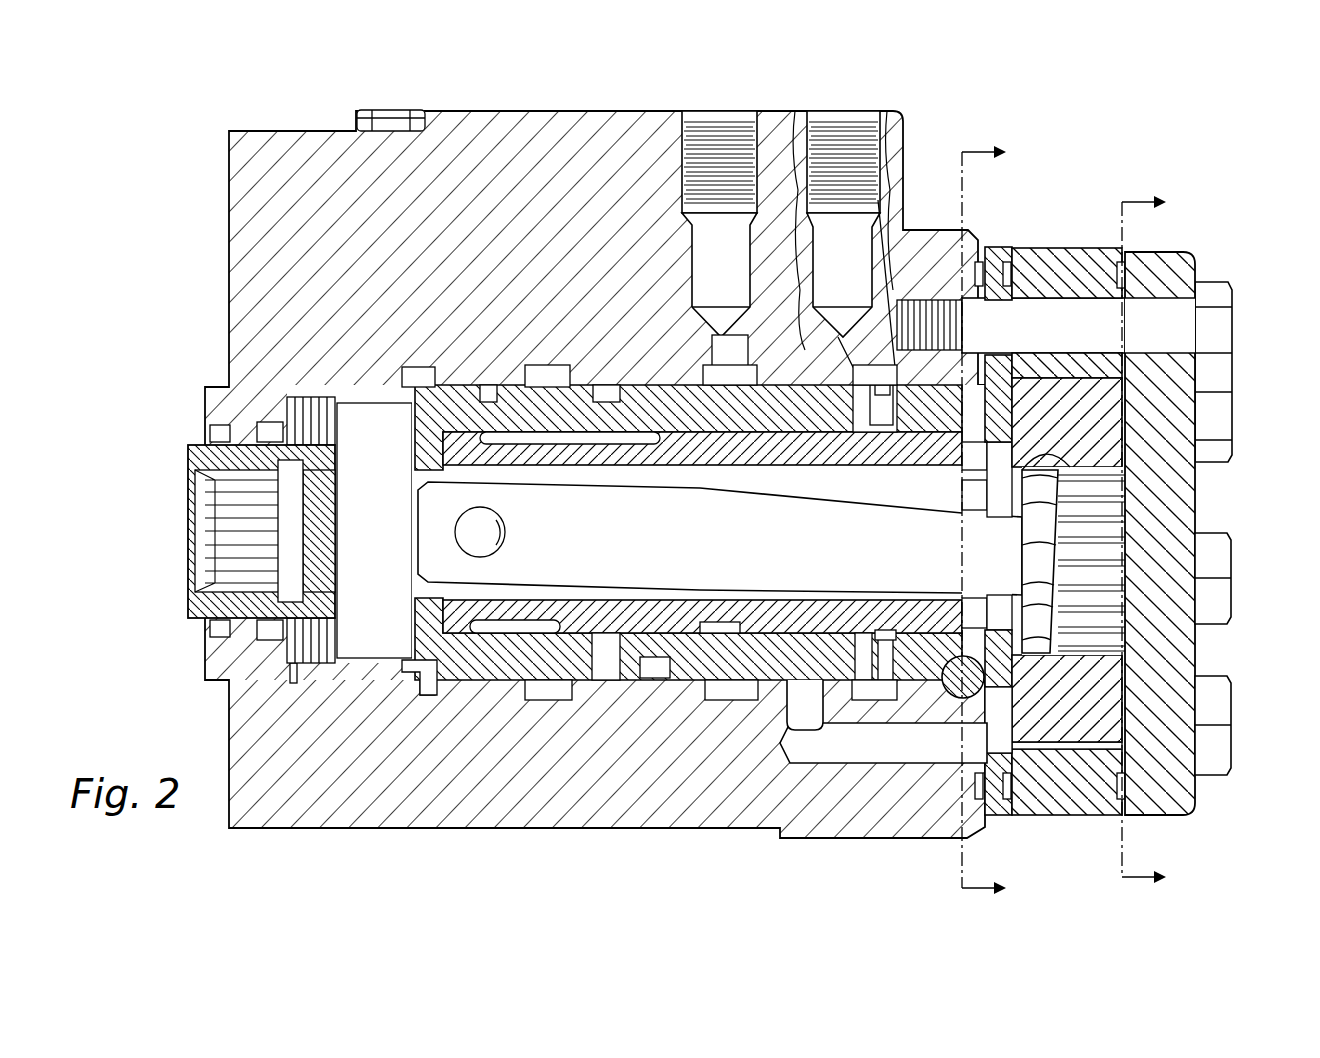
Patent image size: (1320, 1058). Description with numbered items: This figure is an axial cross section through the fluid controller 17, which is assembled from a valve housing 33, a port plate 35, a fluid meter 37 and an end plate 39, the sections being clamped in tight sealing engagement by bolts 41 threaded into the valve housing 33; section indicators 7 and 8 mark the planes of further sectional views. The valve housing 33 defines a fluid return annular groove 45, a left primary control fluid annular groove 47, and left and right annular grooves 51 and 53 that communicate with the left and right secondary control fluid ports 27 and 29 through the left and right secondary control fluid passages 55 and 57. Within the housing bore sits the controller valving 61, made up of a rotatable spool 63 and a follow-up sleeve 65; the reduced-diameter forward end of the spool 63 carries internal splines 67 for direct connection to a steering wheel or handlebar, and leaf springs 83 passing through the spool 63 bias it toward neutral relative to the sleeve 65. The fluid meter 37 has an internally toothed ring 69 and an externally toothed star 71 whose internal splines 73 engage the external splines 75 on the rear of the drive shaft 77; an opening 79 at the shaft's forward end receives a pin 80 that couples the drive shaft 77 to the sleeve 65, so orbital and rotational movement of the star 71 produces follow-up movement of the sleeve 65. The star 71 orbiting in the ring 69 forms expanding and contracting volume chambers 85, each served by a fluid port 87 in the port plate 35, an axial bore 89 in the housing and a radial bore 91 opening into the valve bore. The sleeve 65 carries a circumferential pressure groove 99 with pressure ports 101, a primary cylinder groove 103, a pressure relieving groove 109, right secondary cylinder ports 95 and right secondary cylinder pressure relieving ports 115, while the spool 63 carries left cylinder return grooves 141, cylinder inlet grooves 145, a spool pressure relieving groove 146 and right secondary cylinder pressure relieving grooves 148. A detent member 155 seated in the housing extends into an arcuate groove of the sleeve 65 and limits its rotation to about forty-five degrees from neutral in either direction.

The fluid controller 17 is at (710, 486).
The valve housing 33 is at (290, 133).
The left secondary control fluid port 27 is at (720, 111).
The right secondary control fluid port 29 is at (832, 111).
The section line 7- 7 is at (994, 520).
The section line 8- 8 is at (1151, 539).
The fluid meter 37 is at (1070, 232).
The port plate 35 is at (995, 250).
The end plate 39 is at (1195, 265).
The bolts 41 is at (1237, 350).
The left secondary control fluid passage 55 is at (705, 335).
The right secondary control fluid passage 57 is at (850, 337).
The left primary control fluid annular groove 47 is at (545, 365).
The left annular groove 51 is at (702, 375).
The right annular groove 53 is at (855, 383).
The externally toothed star 71 is at (1115, 426).
The external splines 75 is at (1053, 452).
The fluid return annular groove 45 is at (412, 382).
The opening 79 is at (502, 525).
The pin 80 is at (498, 540).
The cylinder inlet grooves 145 is at (605, 442).
The drive shaft 77 is at (690, 534).
The spool 63 is at (780, 458).
The controller valving 61 is at (896, 486).
The right secondary cylinder pressure relieving grooves 148 is at (962, 590).
The internal splines 67 is at (200, 548).
The pressure ports 101 is at (608, 645).
The primary cylinder groove 103 is at (660, 630).
The spool pressure relieving groove 146 is at (718, 625).
The right secondary cylinder ports 95 is at (862, 640).
The right secondary cylinder pressure relieving ports 115 is at (893, 655).
The left cylinder return grooves 141 is at (535, 628).
The internal splines 73 is at (1100, 632).
The pressure relieving groove 109 is at (700, 680).
The fluid ports 87 is at (1000, 717).
The detent member 155 is at (953, 697).
The sleeve 65 is at (470, 670).
The leaf springs 83 is at (360, 640).
The circumferential pressure groove 99 is at (600, 682).
The radial bores 91 is at (765, 682).
The axial bores 89 is at (860, 752).
The fluid volume chambers 85 is at (1028, 770).
The internally toothed ring 69 is at (1065, 814).